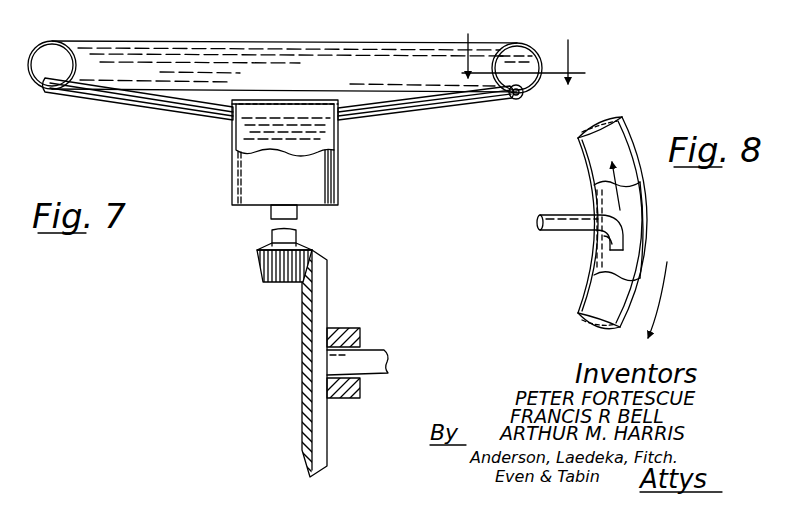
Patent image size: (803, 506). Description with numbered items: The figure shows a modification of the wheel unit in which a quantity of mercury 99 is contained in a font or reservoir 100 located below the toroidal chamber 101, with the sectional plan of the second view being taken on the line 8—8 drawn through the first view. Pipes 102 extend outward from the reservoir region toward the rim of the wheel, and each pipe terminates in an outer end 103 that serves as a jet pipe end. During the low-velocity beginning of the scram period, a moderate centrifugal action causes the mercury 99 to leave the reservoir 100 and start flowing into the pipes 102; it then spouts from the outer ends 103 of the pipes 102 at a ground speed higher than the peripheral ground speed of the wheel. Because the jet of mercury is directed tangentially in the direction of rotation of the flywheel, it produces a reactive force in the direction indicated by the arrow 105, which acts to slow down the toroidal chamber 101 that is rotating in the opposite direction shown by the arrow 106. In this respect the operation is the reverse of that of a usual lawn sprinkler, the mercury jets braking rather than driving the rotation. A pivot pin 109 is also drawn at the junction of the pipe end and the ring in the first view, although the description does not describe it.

In FIG. 7, the section line 8— 8 is at (523, 50).
In FIG. 7, the mercury 99 is at (245, 137).
In FIG. 7, the font or reservoir 100 is at (330, 175).
In FIG. 7, the toroidal chamber 101 is at (392, 46).
In FIG. 7, the pipes 102 is at (156, 111).
In FIG. 8, the pipes 102 is at (560, 217).
In FIG. 7, the outer ends of the pipes 103 is at (535, 88).
In FIG. 8, the outer ends of the pipes 103 is at (609, 243).
In FIG. 8, the arrow 105 is at (645, 200).
In FIG. 8, the arrow 106 is at (670, 307).
In FIG. 7, the pivot pin 109 is at (517, 101).